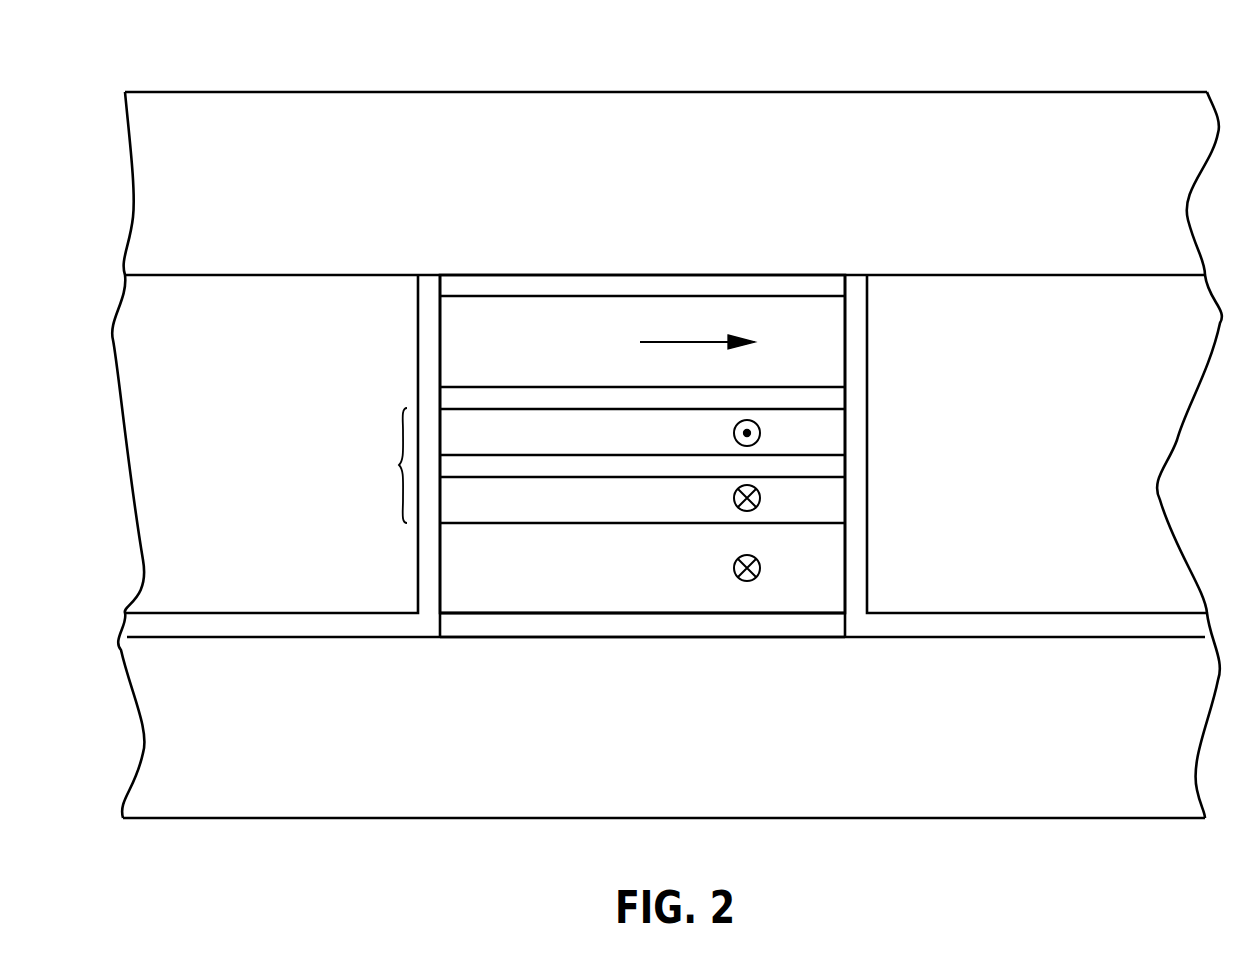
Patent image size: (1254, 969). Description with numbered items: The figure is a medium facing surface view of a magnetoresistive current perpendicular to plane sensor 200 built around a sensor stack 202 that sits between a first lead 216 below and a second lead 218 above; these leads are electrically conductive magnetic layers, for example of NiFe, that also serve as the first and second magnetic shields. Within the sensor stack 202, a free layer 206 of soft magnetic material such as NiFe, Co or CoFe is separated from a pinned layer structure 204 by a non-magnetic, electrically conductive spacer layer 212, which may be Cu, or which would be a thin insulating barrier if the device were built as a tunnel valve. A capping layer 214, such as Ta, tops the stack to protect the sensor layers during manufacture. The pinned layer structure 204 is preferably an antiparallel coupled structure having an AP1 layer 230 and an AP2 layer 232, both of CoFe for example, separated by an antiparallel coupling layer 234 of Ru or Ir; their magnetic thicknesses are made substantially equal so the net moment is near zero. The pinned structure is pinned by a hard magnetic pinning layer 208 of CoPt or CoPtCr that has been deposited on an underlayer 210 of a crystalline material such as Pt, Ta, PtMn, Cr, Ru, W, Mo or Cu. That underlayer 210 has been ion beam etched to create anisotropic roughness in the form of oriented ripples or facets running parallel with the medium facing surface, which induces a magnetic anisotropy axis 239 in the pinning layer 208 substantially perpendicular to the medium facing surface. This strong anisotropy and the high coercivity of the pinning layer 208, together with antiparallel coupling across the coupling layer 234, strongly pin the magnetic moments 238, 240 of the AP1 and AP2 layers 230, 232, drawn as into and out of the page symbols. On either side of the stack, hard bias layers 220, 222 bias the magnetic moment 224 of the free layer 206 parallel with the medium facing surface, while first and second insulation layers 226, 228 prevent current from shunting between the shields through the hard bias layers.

The magnetoresistive CPP sensor 200 is at (985, 82).
The sensor stack 202 is at (846, 367).
The pinned layer structure 204 is at (400, 497).
The free layer 206 is at (597, 341).
The hard magnetic pinning layer 208 is at (703, 565).
The underlayer 210 is at (693, 625).
The spacer layer 212 is at (705, 400).
The capping layer 214 is at (720, 285).
The first lead 216 is at (575, 730).
The second lead 218 is at (722, 170).
The hard bias layer 220 is at (1103, 398).
The hard bias layer 222 is at (340, 408).
The magnetic moment of the free layer 224 is at (667, 342).
The first insulation layer 226 is at (855, 545).
The second insulation layer 228 is at (430, 567).
The AP1 layer 230 is at (568, 498).
The AP2 layer 232 is at (570, 428).
The antiparallel coupling layer 234 is at (705, 470).
The magnetic moment of the AP1 layer 238 is at (760, 498).
The magnetic anisotropy axis 239 is at (760, 568).
The magnetic moment of the AP2 layer 240 is at (760, 433).